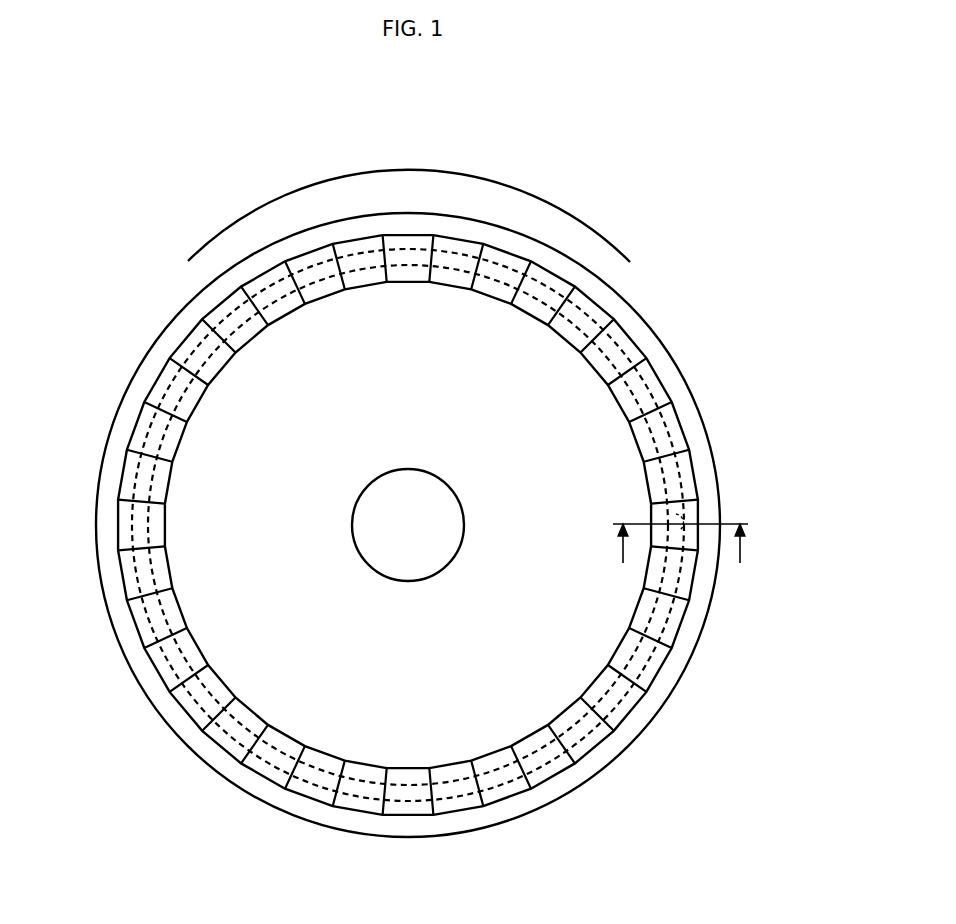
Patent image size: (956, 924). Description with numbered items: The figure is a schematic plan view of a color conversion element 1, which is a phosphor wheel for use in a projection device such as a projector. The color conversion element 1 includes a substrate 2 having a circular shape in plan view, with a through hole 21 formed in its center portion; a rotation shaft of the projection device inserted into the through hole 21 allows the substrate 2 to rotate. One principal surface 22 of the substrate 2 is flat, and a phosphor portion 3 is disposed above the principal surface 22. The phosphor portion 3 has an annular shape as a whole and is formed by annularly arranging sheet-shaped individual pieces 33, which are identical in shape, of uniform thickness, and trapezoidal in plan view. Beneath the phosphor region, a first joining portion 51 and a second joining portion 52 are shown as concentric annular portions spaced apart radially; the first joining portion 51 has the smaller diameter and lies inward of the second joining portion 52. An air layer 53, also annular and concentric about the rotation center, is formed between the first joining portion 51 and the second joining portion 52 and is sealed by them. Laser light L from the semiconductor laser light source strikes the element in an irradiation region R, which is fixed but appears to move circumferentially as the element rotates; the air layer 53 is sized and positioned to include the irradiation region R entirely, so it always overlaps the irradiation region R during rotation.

The color conversion element 1 is at (130, 172).
The substrate 2 is at (238, 243).
The phosphor portion 3 is at (112, 460).
The through hole 21 is at (402, 470).
The principal surface 22 is at (553, 256).
The individual pieces 33 is at (325, 253).
The first joining portion 51 is at (650, 520).
The second joining portion 52 is at (672, 526).
The air layer 53 is at (668, 437).
The laser light L is at (672, 523).
The irradiation region R is at (680, 527).